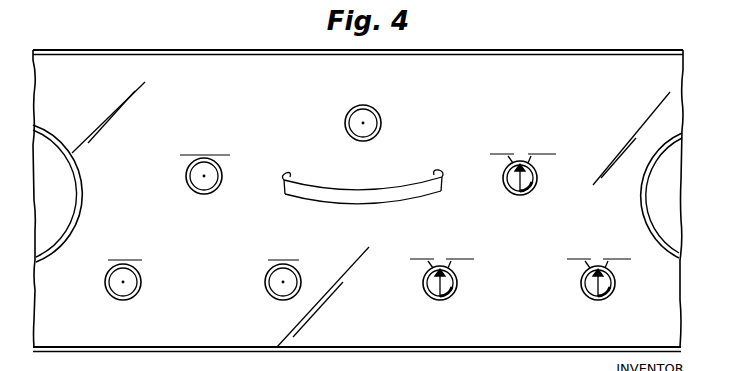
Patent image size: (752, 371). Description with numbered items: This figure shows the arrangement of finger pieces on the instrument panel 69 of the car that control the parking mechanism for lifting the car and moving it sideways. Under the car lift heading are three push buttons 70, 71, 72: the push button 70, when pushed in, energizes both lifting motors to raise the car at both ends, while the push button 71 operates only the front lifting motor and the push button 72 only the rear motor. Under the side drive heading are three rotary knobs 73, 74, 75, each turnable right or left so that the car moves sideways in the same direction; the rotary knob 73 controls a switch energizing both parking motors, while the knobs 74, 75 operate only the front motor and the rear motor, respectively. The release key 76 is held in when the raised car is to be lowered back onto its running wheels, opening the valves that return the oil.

The instrument panel 69 is at (666, 92).
The push button 70 is at (200, 176).
The push button 71 is at (130, 282).
The push button 72 is at (276, 283).
The rotary knob 73 is at (527, 178).
The rotary knob 74 is at (449, 283).
The rotary knob 75 is at (588, 286).
The release key 76 is at (378, 116).